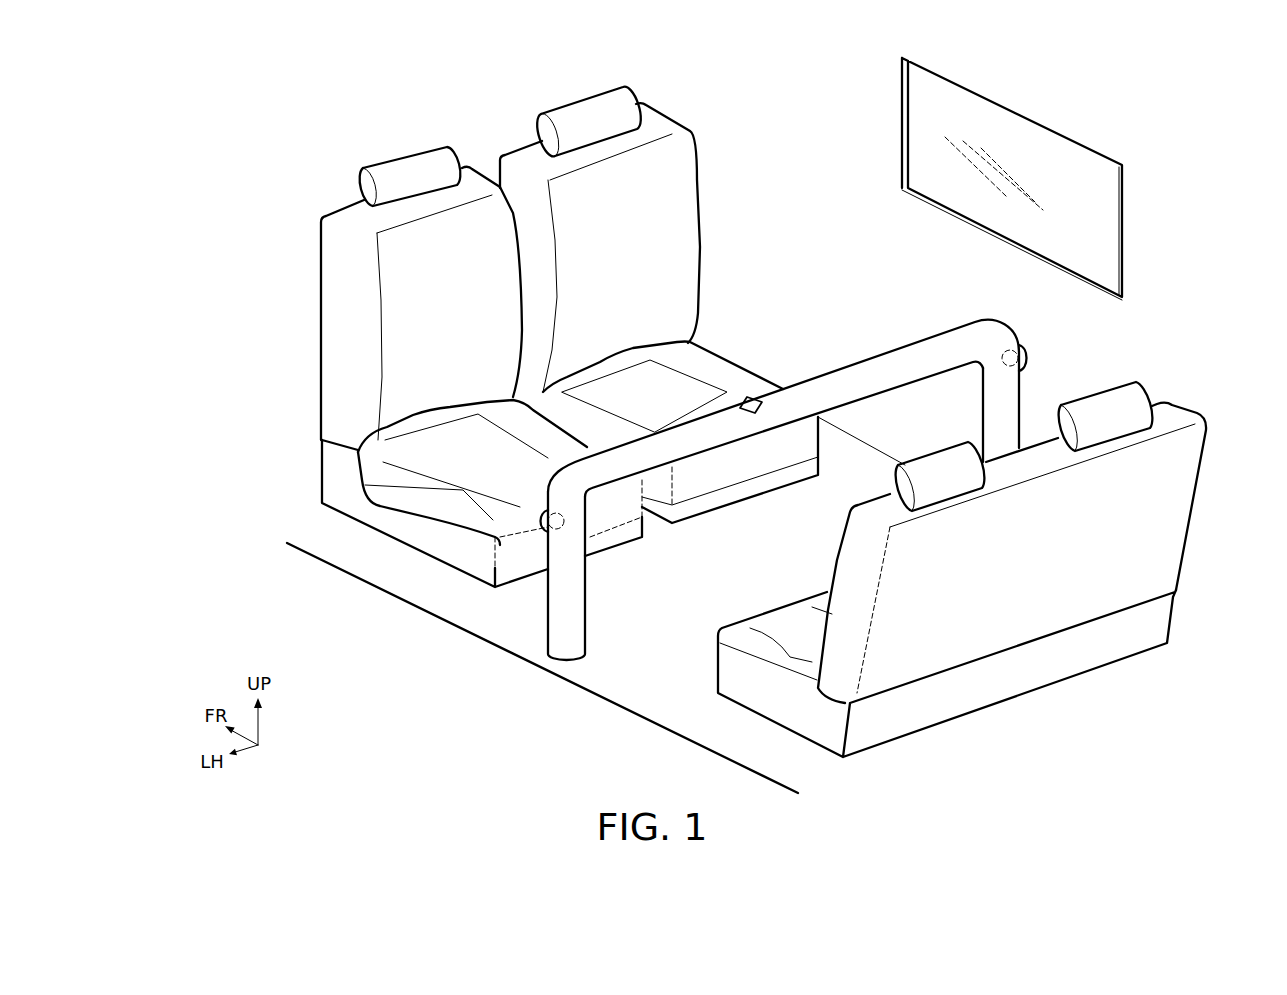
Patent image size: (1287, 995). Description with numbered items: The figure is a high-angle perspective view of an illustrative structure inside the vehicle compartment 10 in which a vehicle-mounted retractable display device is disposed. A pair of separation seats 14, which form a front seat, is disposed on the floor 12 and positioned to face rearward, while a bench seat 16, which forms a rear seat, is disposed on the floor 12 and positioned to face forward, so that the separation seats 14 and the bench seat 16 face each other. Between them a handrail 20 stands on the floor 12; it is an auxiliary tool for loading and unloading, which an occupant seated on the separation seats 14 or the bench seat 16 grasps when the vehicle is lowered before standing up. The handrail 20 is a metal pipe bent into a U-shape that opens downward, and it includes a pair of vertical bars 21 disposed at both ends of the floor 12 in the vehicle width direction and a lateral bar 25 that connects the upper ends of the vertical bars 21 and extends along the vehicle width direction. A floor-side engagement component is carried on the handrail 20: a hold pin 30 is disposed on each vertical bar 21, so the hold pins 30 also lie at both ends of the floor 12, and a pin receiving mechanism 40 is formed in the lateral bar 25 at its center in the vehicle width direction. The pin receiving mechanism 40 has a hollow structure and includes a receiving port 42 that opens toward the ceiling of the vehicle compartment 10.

The vehicle compartment 10 is at (815, 120).
The floor 12 is at (520, 640).
The separation seat 14 is at (352, 215).
The bench seat 16 is at (1177, 487).
The handrail 20 is at (764, 483).
The vertical bar 21 is at (566, 648).
The lateral bar 25 is at (887, 370).
The hold pin 30 is at (548, 514).
The pin receiving mechanism 40 is at (763, 426).
The receiving port 42 is at (753, 394).